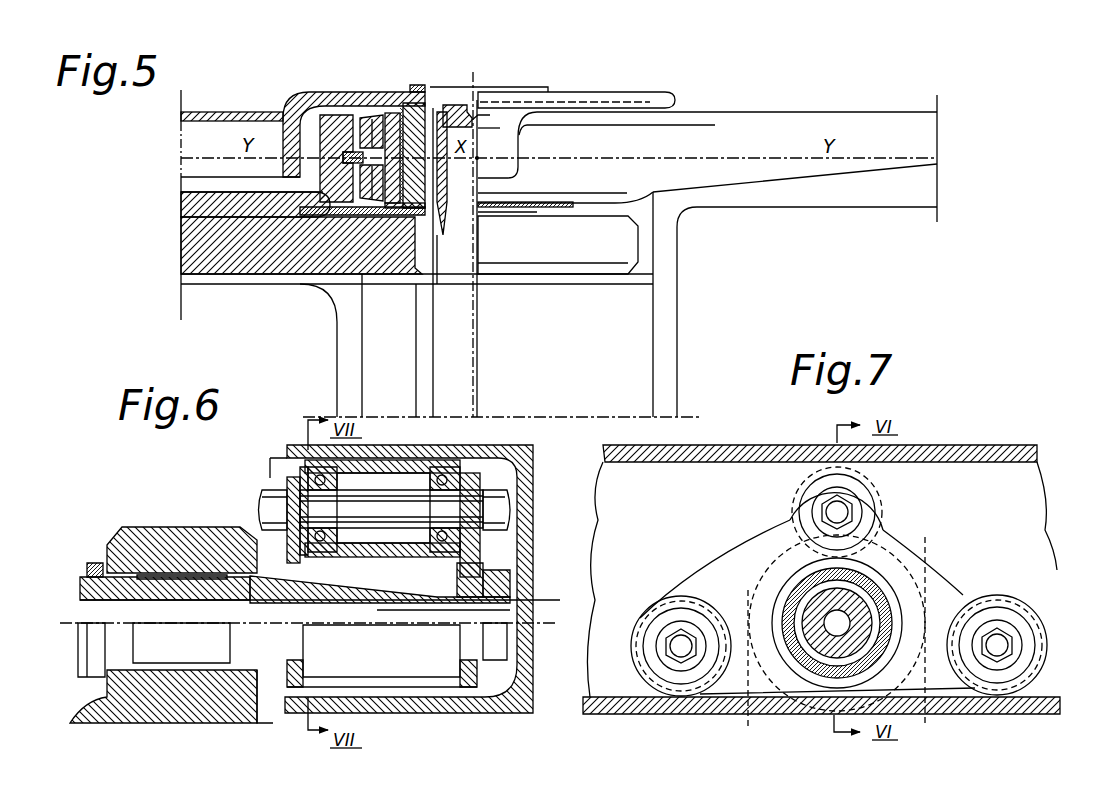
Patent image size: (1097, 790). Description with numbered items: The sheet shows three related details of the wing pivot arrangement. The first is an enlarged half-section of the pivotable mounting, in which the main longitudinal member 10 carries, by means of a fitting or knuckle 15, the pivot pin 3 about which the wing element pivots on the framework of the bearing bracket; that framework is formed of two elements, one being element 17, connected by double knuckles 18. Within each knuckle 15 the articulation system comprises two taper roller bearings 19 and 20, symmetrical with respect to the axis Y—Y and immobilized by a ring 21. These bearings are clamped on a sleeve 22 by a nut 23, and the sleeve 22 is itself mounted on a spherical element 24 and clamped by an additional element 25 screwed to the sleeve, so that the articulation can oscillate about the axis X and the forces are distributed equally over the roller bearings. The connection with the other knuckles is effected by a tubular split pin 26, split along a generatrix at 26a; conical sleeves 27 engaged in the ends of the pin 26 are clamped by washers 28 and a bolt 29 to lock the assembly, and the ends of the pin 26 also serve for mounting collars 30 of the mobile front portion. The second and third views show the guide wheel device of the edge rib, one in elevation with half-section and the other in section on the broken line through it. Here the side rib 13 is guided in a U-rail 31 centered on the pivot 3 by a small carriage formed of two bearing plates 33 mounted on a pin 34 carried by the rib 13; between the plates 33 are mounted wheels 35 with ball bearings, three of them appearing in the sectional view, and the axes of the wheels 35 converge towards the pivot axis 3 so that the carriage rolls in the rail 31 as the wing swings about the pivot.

In FIG. 5, the pivot pin 3 is at (482, 84).
In FIG. 5, the longitudinal member 10 is at (795, 195).
In FIG. 6, the side rib 13 is at (103, 697).
In FIG. 5, the knuckle 15 is at (283, 116).
In FIG. 5, the framework element 17 is at (344, 343).
In FIG. 5, the double knuckle 18 is at (283, 247).
In FIG. 5, the taper roller bearing 19 is at (372, 208).
In FIG. 5, the taper roller bearing 20 is at (348, 152).
In FIG. 5, the ring 21 is at (320, 132).
In FIG. 5, the sleeve 22 is at (378, 145).
In FIG. 5, the nut 23 is at (415, 108).
In FIG. 5, the spherical element 24 is at (440, 200).
In FIG. 5, the additional element 25 is at (438, 106).
In FIG. 5, the tubular split pin 26 is at (533, 348).
In FIG. 5, the split 26a is at (432, 355).
In FIG. 5, the conical sleeve 27 is at (447, 178).
In FIG. 5, the washer 28 is at (472, 120).
In FIG. 5, the bolt 29 is at (478, 140).
In FIG. 5, the collar 30 is at (642, 103).
In FIG. 6, the U-rail 31 is at (525, 452).
In FIG. 7, the U-rail 31 is at (935, 450).
In FIG. 6, the bearing plate 33 is at (285, 540).
In FIG. 7, the bearing plate 33 is at (736, 580).
In FIG. 6, the pin 34 is at (152, 608).
In FIG. 6, the wheel 35 is at (340, 462).
In FIG. 7, the wheel 35 is at (650, 610).